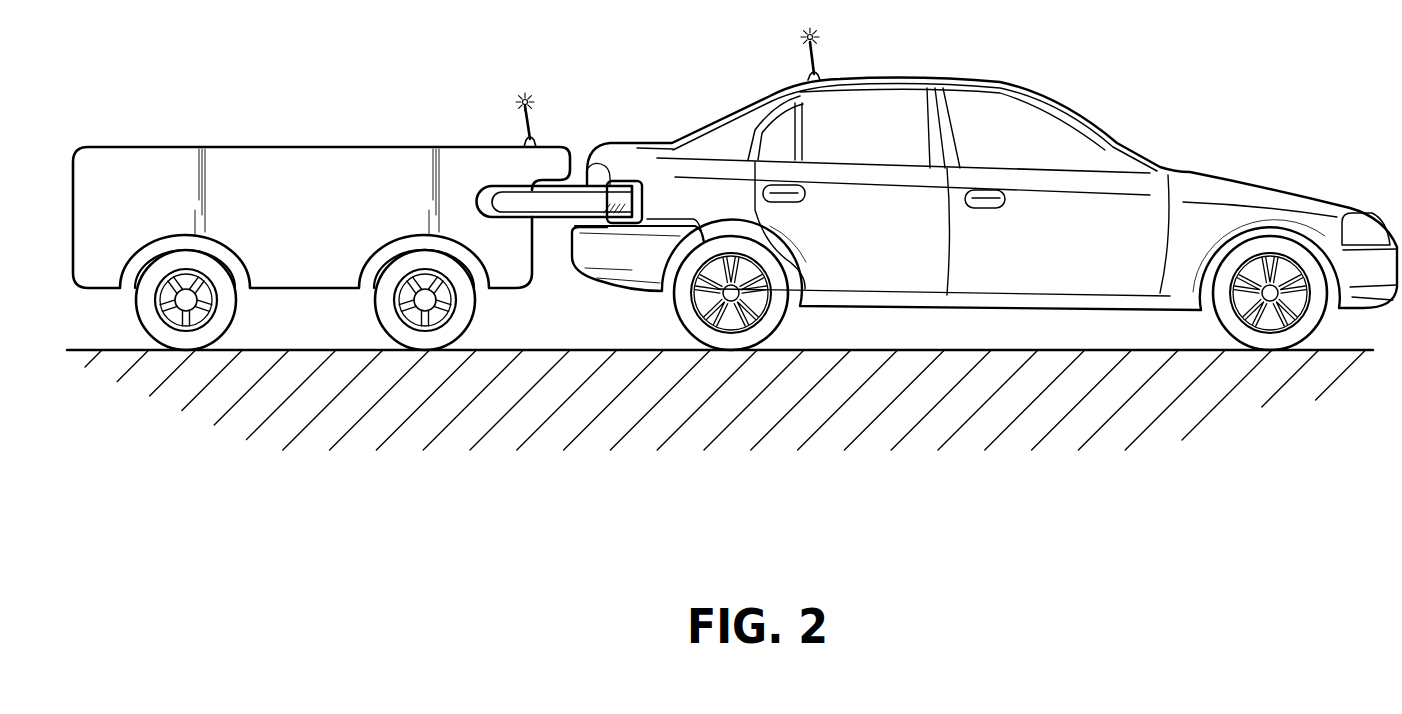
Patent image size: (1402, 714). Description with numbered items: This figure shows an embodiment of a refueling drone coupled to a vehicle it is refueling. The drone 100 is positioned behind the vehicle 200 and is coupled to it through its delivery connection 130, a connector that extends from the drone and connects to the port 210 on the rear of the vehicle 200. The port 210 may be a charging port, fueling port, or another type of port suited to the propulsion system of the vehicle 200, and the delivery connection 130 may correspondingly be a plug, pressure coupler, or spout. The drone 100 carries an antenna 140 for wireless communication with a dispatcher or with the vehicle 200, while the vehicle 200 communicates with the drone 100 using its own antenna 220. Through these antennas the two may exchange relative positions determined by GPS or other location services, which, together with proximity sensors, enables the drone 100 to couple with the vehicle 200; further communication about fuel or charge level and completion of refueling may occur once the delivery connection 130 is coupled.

The drone 100 is at (150, 146).
The delivery connection 130 is at (550, 206).
The antenna 140 is at (523, 122).
The vehicle 200 is at (903, 79).
The port 210 is at (638, 182).
The antenna 220 is at (808, 63).